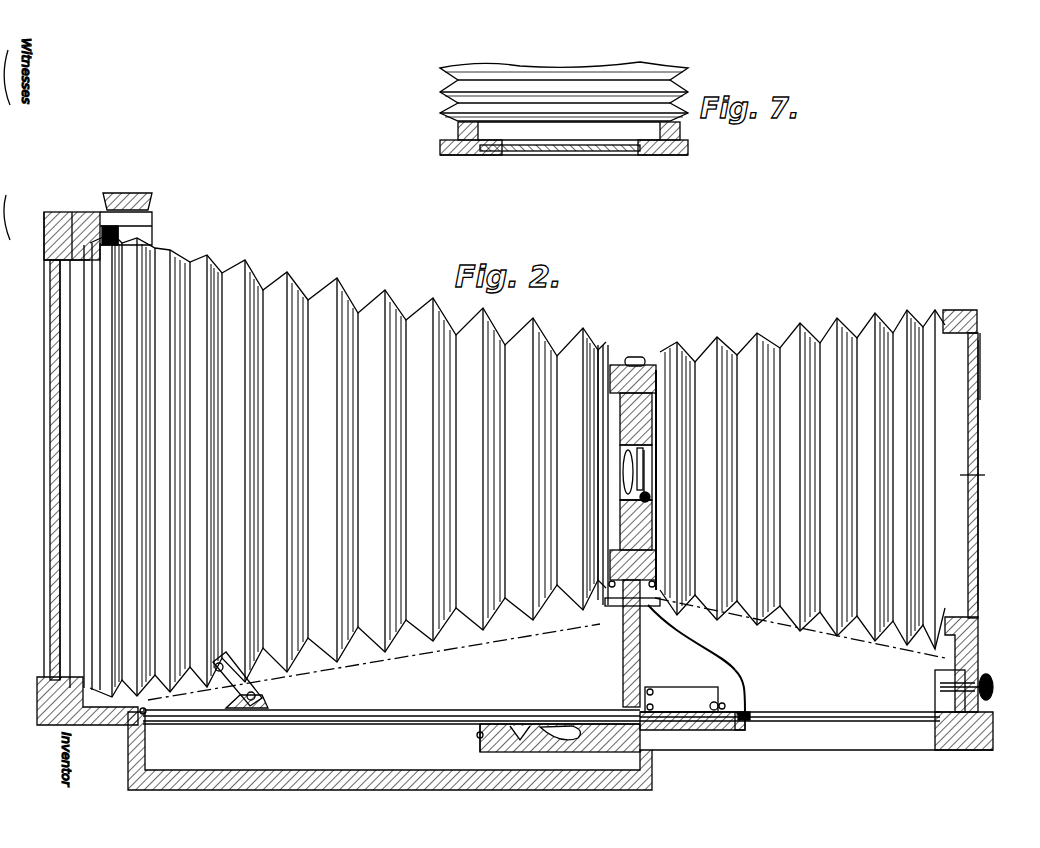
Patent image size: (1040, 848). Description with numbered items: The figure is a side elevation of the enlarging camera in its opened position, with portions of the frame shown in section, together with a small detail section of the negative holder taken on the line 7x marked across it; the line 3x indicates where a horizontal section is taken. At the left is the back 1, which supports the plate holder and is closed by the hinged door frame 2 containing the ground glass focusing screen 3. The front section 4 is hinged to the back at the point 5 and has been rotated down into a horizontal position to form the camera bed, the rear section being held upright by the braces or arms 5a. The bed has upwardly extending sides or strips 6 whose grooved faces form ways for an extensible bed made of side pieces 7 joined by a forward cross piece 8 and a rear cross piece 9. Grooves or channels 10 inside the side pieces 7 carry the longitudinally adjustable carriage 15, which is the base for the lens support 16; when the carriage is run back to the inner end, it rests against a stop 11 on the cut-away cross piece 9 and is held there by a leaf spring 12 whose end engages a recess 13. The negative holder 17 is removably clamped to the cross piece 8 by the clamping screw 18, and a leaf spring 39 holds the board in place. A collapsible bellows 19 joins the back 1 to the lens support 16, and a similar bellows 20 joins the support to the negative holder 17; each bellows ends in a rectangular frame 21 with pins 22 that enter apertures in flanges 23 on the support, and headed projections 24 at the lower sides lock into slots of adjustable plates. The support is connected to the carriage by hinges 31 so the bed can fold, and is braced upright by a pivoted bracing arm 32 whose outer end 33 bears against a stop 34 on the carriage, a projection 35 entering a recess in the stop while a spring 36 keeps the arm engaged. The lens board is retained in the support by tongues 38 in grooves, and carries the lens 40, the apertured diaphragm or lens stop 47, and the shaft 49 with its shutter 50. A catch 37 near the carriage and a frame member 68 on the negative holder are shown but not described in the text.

In FIG. 2, the back 1 is at (142, 252).
In FIG. 2, the hinged door frame 2 is at (64, 238).
In FIG. 2, the ground glass focusing screen 3 is at (56, 335).
In FIG. 2, the section line 3x is at (150, 545).
In FIG. 2, the front section 4 is at (452, 778).
In FIG. 2, the hinge point 5 is at (148, 714).
In FIG. 2, the braces or arms 5a is at (258, 690).
In FIG. 2, the sides or strips 6 is at (391, 735).
In FIG. 2, the side pieces 7 is at (855, 735).
In FIG. 2, the section line 7x is at (960, 475).
In FIG. 2, the cross piece 8 is at (958, 735).
In FIG. 2, the cross piece 9 is at (524, 735).
In FIG. 2, the grooves or channels 10 is at (836, 714).
In FIG. 2, the stop 11 is at (480, 722).
In FIG. 2, the leaf spring 12 is at (552, 730).
In FIG. 2, the recess 13 is at (722, 732).
In FIG. 2, the carriage 15 is at (692, 732).
In FIG. 2, the lens support 16 is at (628, 615).
In FIG. 7, the negative holder 17 is at (447, 150).
In FIG. 2, the negative holder 17 is at (958, 312).
In FIG. 2, the clamping screw 18 is at (996, 686).
In FIG. 2, the collapsible bellows 19 is at (348, 465).
In FIG. 7, the bellows 20 is at (558, 66).
In FIG. 2, the bellows 20 is at (802, 479).
In FIG. 2, the rectangular frames 21 is at (681, 457).
In FIG. 2, the pins 22 is at (656, 364).
In FIG. 2, the flanges 23 is at (612, 366).
In FIG. 2, the headed projections 24 is at (608, 584).
In FIG. 2, the hinges 31 is at (681, 699).
In FIG. 2, the pivoted bracket or bracing arm 32 is at (691, 637).
In FIG. 2, the outer end 33 is at (748, 696).
In FIG. 2, the stop 34 is at (712, 702).
In FIG. 2, the projection 35 is at (724, 702).
In FIG. 2, the spring 36 is at (650, 496).
In FIG. 2, the catch 37 is at (750, 720).
In FIG. 2, the tongues 38 is at (655, 410).
In FIG. 2, the leaf spring 39 is at (640, 356).
In FIG. 2, the lens 40 is at (624, 470).
In FIG. 2, the apertured diaphragm or lens stop 47 is at (642, 462).
In FIG. 2, the shaft 49 is at (652, 505).
In FIG. 2, the shutter 50 is at (645, 476).
In FIG. 2, the rear frame edge 68 is at (978, 553).